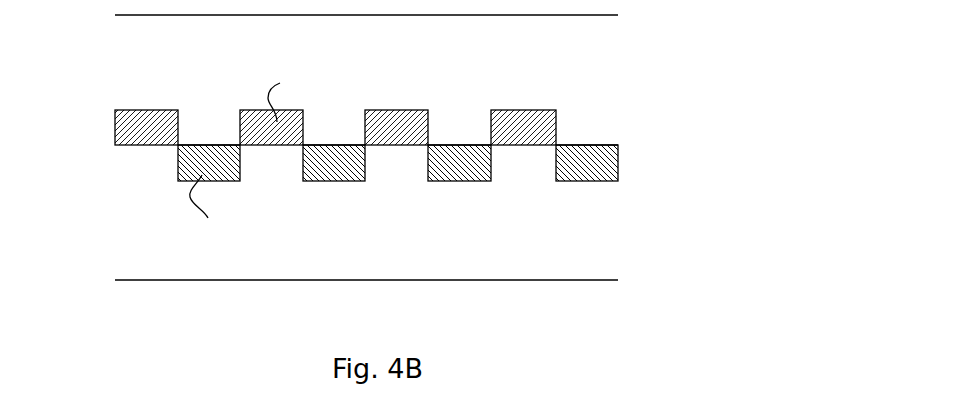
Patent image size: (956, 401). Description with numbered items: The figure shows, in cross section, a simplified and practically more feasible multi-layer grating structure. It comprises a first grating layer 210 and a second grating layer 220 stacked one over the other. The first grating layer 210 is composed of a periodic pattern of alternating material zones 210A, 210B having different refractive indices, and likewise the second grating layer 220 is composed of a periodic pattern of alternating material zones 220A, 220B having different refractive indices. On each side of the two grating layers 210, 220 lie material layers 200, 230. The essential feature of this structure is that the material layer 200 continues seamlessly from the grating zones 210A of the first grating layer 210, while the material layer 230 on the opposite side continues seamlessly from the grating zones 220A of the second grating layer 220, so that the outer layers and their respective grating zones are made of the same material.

The material layer 200 is at (93, 183).
The first grating layer 210 is at (375, 204).
The material zone 210A is at (613, 163).
The material zone 210B is at (535, 162).
The second grating layer 220 is at (384, 104).
The material zone 220A is at (526, 112).
The material zone 220B is at (587, 125).
The material layer 230 is at (93, 15).